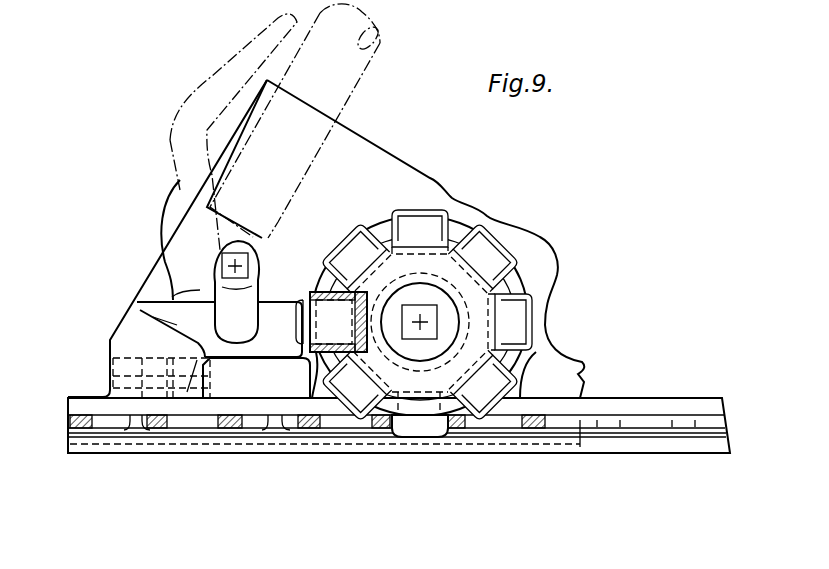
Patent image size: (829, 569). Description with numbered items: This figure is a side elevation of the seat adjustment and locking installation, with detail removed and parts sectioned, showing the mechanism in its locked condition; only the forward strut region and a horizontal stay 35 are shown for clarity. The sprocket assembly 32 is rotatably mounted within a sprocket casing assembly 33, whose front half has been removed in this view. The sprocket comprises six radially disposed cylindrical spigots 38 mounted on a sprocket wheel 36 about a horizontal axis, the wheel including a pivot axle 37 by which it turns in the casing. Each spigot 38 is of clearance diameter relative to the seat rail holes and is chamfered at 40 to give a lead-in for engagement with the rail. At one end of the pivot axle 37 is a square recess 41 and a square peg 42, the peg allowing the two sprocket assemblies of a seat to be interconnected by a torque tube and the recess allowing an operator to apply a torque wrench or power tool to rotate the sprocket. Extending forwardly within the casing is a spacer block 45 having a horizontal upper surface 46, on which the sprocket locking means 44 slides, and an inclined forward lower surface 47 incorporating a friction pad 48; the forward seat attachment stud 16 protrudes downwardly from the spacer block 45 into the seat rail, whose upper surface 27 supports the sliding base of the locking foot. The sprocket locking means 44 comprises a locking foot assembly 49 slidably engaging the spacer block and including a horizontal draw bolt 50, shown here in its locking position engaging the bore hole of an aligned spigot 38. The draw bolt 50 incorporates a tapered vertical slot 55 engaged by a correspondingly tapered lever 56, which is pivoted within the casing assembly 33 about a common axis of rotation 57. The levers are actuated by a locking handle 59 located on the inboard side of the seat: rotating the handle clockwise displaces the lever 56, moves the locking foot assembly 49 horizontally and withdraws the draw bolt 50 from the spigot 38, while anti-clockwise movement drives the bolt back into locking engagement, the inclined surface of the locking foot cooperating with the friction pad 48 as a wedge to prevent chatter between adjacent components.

The attachment stud 16 is at (188, 397).
The seat rail upper surface 27 is at (283, 430).
The sprocket assembly 32 is at (518, 272).
The sprocket casing assembly 33 is at (458, 250).
The horizontal stay 35 is at (654, 398).
The sprocket wheel 36 is at (480, 222).
The pivot axle 37 is at (420, 322).
The spigot 38 is at (427, 222).
The chamfer 40 is at (372, 232).
The square recess 41 is at (422, 340).
The square peg 42 is at (325, 352).
The sprocket locking means 44 is at (268, 343).
The spacer block 45 is at (100, 369).
The horizontal upper surface 46 is at (170, 428).
The inclined forward lower surface 47 is at (128, 376).
The friction pad 48 is at (120, 395).
The locking foot assembly 49 is at (172, 300).
The draw bolt 50 is at (308, 322).
The tapered vertical slot 55 is at (150, 313).
The lever 56 is at (212, 258).
The common axis of rotation 57 is at (235, 268).
The locking handle 59 is at (237, 53).